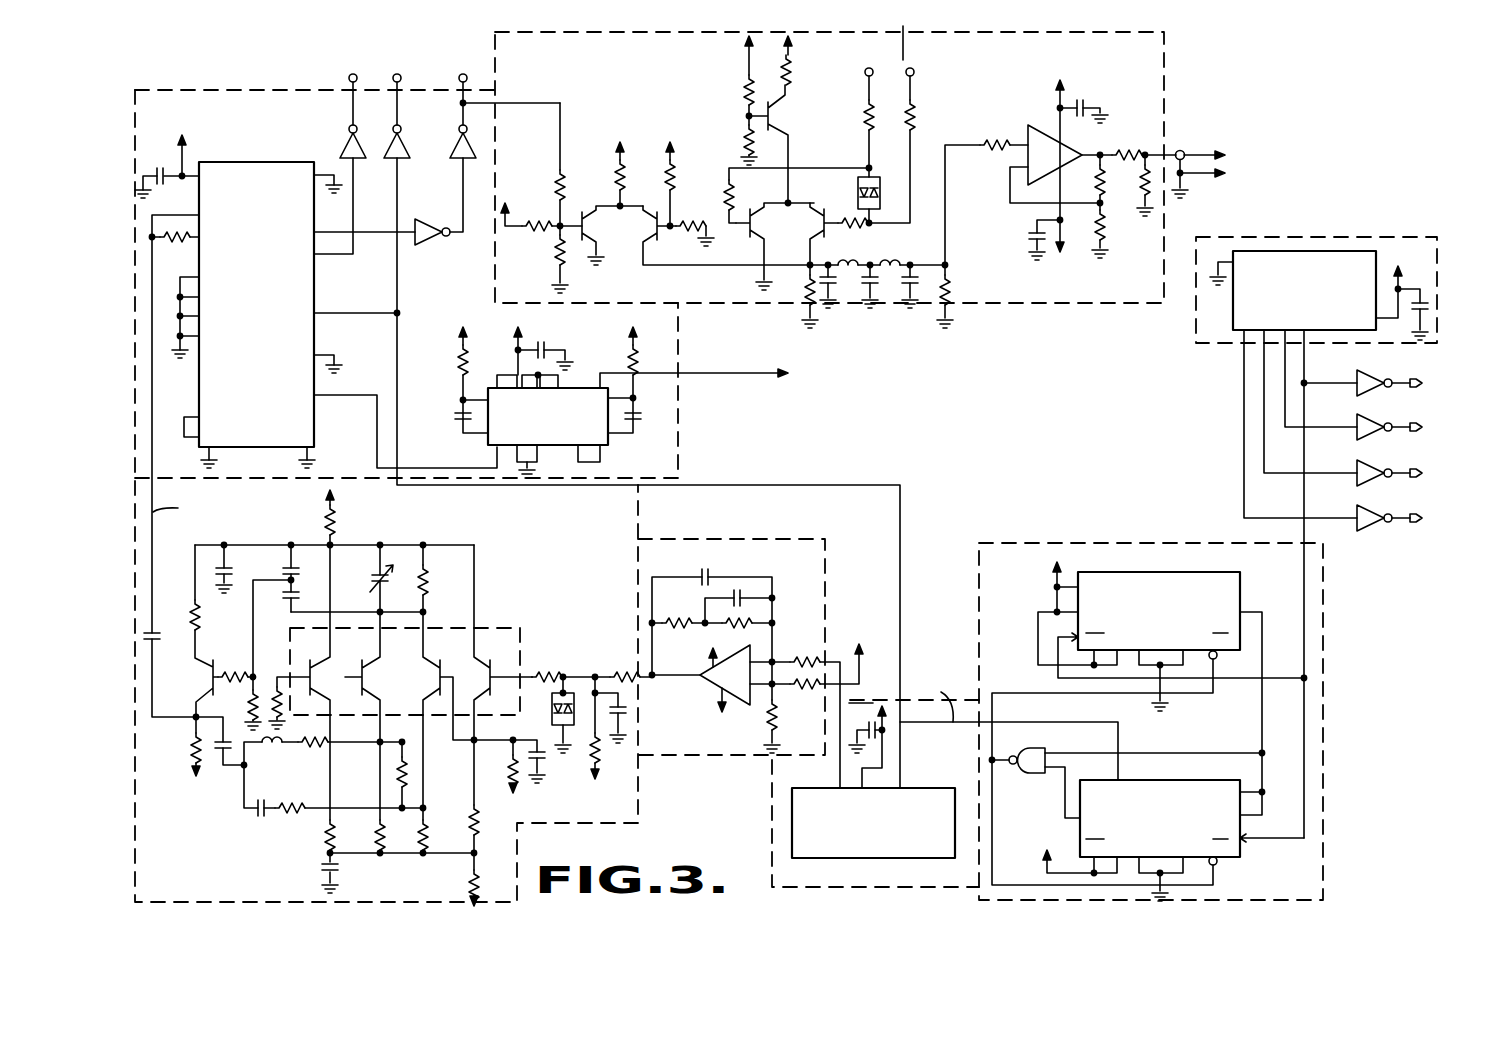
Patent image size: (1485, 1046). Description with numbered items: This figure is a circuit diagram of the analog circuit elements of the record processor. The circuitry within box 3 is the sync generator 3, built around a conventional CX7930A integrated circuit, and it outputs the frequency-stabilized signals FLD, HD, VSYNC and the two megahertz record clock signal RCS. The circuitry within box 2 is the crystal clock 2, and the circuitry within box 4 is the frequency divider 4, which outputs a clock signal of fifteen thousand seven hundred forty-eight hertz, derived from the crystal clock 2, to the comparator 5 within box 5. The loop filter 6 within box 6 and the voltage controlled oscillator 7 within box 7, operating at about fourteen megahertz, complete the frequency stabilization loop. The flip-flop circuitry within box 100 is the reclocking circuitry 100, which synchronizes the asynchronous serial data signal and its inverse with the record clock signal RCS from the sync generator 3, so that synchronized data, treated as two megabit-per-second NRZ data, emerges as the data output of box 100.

The crystal clock 2 is at (1306, 236).
The sync generator 3 is at (239, 89).
The frequency divider 4 is at (1075, 543).
The comparator 5 is at (772, 818).
The loop filter 6 is at (703, 757).
The 14.33 MHz V.C.O. 7 is at (638, 812).
The reclocking circuitry 100 is at (1010, 304).